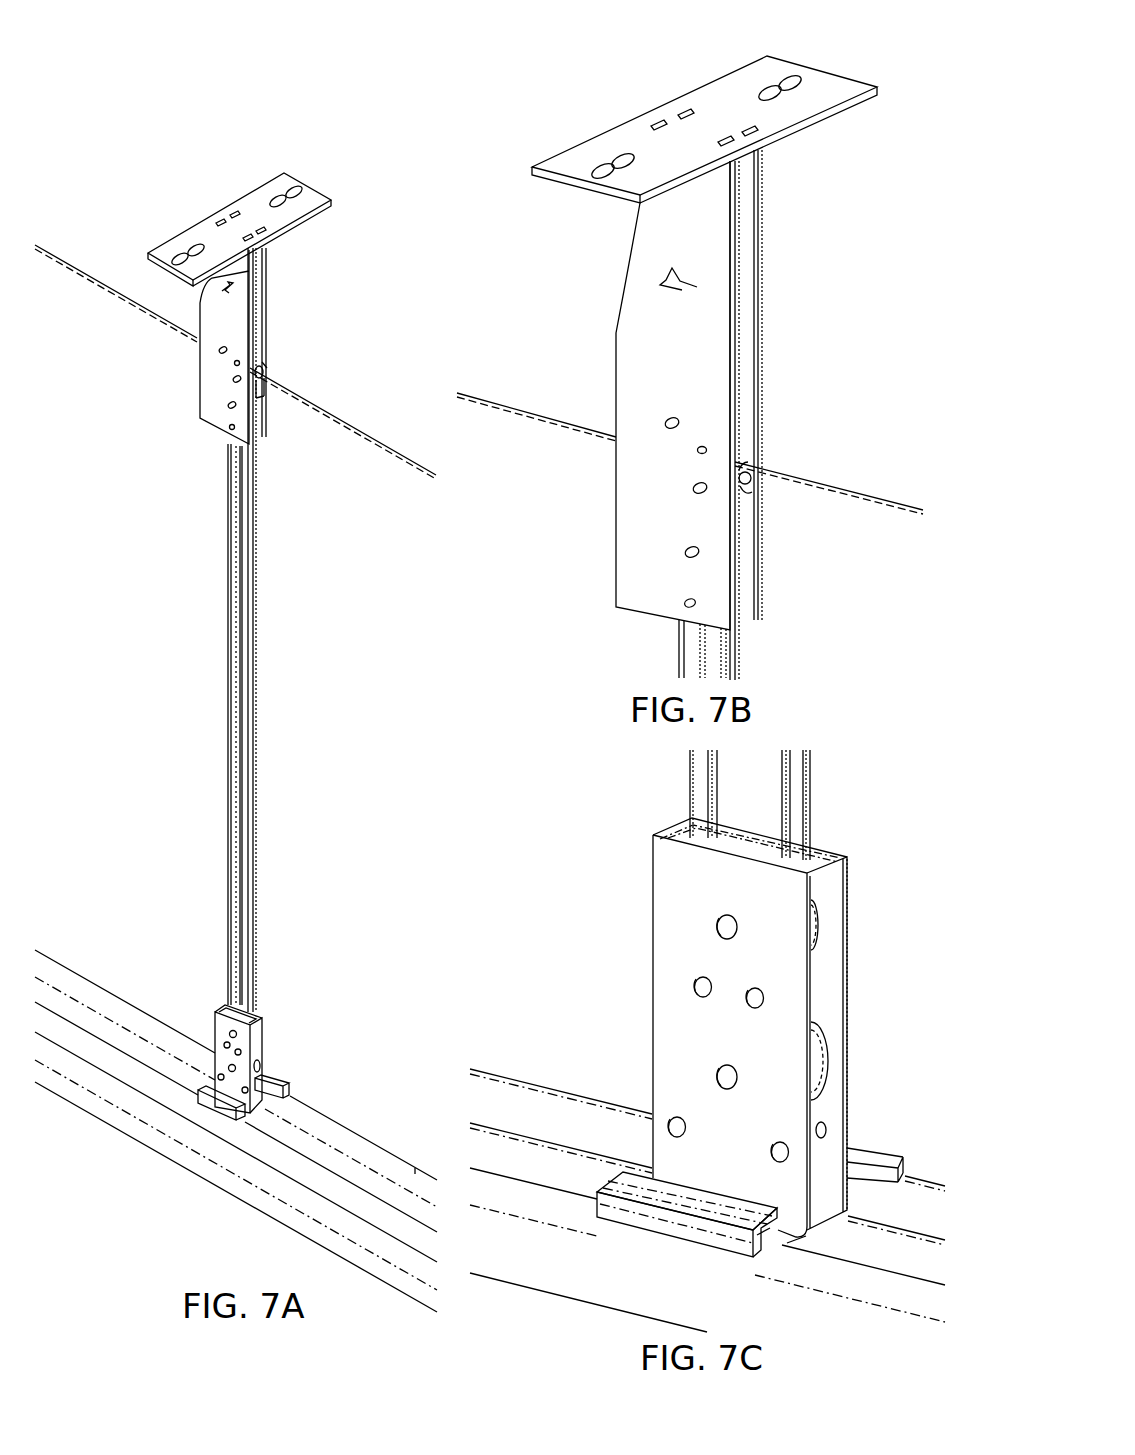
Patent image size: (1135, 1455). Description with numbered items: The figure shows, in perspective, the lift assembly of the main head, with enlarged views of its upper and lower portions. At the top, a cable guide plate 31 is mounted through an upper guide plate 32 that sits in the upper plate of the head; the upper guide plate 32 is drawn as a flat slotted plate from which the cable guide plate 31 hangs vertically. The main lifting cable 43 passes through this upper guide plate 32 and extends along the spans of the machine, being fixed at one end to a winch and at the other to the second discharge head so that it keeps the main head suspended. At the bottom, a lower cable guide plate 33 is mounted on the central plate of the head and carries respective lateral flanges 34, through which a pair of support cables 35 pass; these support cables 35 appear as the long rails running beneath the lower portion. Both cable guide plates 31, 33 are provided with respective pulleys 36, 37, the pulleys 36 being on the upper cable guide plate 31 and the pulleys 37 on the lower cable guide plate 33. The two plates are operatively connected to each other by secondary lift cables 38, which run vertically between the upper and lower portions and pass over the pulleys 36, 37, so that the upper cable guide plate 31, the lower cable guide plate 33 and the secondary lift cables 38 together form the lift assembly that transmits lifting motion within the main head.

In FIG. 7A, the cable guide plate 31 is at (240, 318).
In FIG. 7B, the cable guide plate 31 is at (677, 390).
In FIG. 7A, the upper guide plate 32 is at (265, 193).
In FIG. 7B, the upper guide plate 32 is at (667, 124).
In FIG. 7A, the lower cable guide plate 33 is at (245, 1043).
In FIG. 7C, the lower cable guide plate 33 is at (662, 942).
In FIG. 7A, the lateral flanges 34 is at (270, 1084).
In FIG. 7C, the lateral flanges 34 is at (862, 1173).
In FIG. 7A, the support cables 35 is at (312, 1112).
In FIG. 7C, the support cables 35 is at (707, 1200).
In FIG. 7A, the pulleys 36 is at (253, 364).
In FIG. 7B, the pulleys 36 is at (741, 482).
In FIG. 7A, the pulleys 37 is at (257, 1063).
In FIG. 7C, the pulleys 37 is at (815, 920).
In FIG. 7A, the secondary lift cables 38 is at (230, 617).
In FIG. 7B, the secondary lift cables 38 is at (737, 655).
In FIG. 7C, the secondary lift cables 38 is at (808, 808).
In FIG. 7A, the main lifting cable 43 is at (47, 244).
In FIG. 7B, the main lifting cable 43 is at (690, 453).